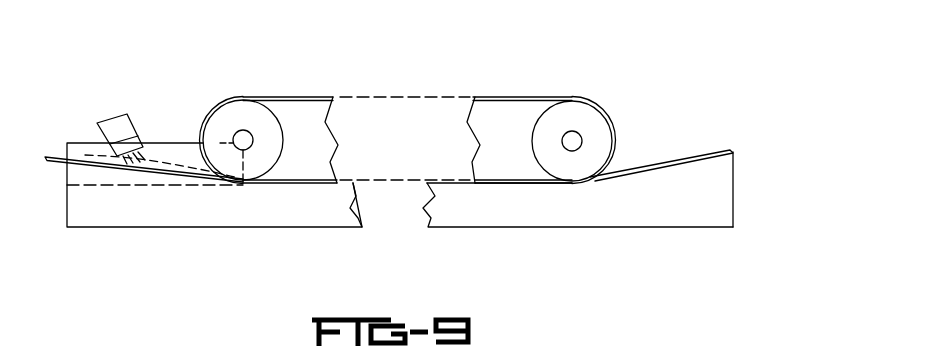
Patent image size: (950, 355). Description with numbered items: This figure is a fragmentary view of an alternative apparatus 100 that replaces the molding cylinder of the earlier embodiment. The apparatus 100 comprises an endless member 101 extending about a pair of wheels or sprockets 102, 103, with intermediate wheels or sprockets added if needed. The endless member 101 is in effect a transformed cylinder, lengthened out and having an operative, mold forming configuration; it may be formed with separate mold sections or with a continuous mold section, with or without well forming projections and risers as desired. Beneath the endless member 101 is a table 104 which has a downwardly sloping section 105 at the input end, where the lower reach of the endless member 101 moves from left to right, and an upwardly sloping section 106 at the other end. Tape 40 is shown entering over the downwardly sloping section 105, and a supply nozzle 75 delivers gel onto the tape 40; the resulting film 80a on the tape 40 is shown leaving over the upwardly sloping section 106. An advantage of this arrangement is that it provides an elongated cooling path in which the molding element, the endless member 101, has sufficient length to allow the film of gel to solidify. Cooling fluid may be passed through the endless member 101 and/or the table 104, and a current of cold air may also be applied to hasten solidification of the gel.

The tape 40 is at (62, 152).
The supply nozzle 75 is at (110, 117).
The film 80a is at (690, 155).
The alternative apparatus 100 is at (466, 74).
The endless member 101 is at (282, 97).
The wheel or sprocket 102 is at (227, 117).
The wheel or sprocket 103 is at (582, 117).
The table 104 is at (443, 213).
The downwardly sloping section 105 is at (85, 215).
The upwardly sloping section 106 is at (667, 213).